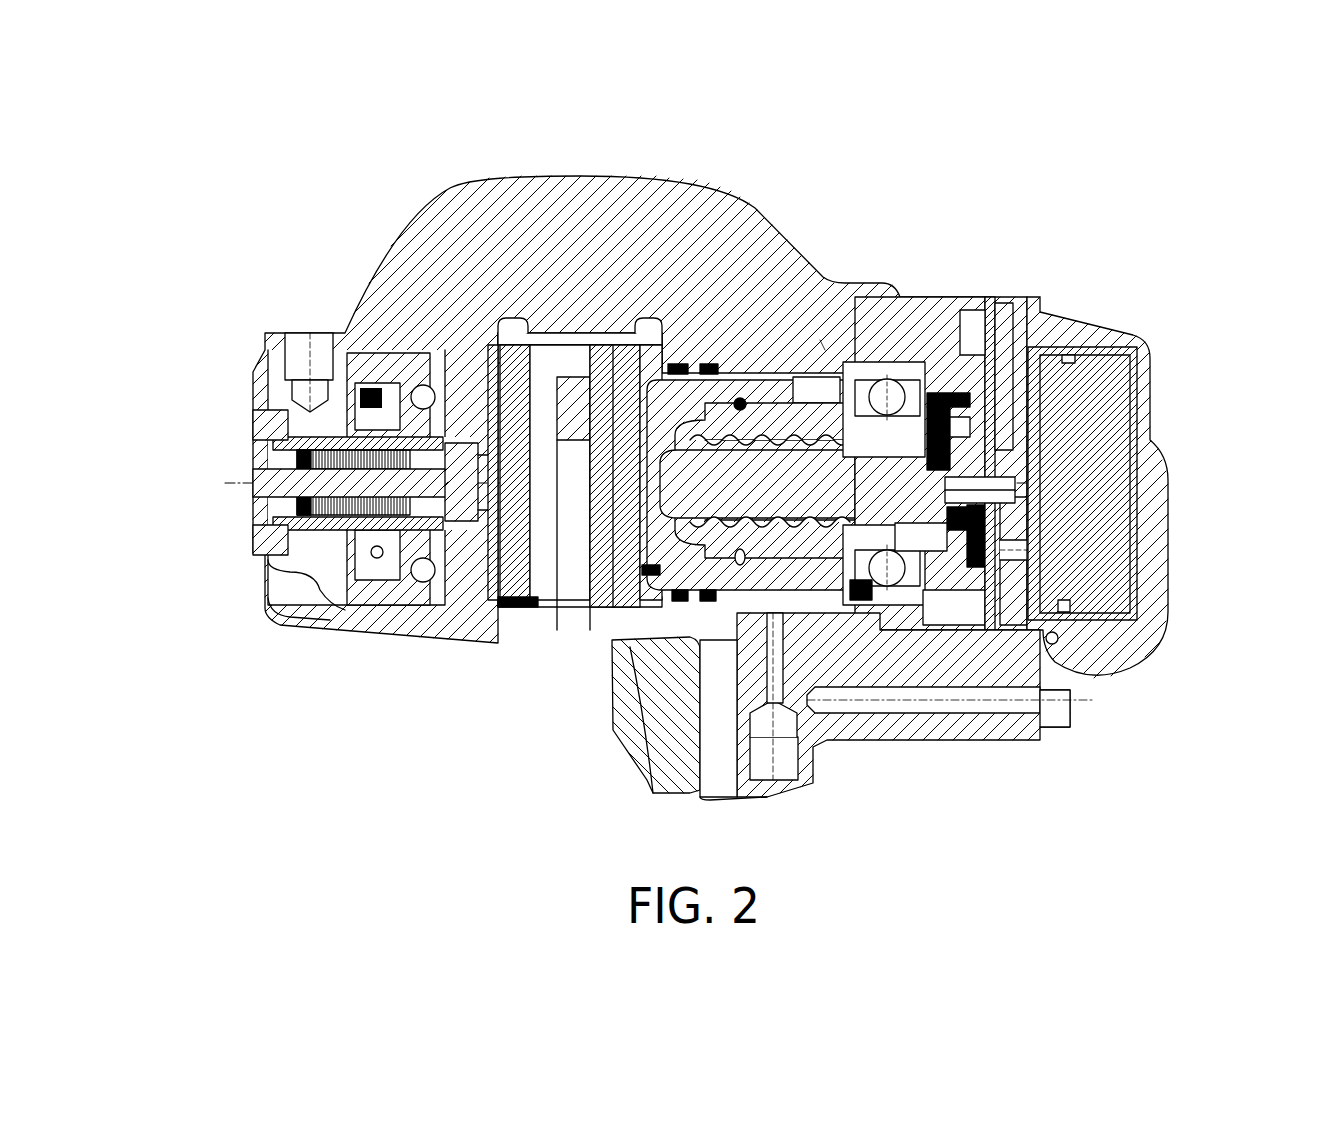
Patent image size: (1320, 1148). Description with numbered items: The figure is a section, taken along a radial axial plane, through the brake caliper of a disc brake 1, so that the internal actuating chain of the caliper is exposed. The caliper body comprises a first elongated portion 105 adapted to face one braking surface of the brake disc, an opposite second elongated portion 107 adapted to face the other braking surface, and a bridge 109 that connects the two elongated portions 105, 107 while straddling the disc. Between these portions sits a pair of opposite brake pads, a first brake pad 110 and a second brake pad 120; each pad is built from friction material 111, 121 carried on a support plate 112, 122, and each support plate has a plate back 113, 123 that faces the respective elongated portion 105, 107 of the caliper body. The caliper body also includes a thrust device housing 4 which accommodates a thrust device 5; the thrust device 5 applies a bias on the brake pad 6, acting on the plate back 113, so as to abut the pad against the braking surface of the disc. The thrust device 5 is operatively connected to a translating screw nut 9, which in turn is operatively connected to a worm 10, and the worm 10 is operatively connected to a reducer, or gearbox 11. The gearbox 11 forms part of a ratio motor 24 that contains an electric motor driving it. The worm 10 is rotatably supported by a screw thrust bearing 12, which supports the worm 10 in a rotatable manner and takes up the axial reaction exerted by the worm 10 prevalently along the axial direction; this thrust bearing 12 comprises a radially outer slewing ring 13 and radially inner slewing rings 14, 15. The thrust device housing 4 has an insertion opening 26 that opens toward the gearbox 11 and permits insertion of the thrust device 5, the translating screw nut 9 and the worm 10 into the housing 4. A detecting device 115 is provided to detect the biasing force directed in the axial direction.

The disc brake 1 is at (965, 192).
The thrust device housing 4 is at (852, 352).
The thrust device 5 is at (822, 345).
The brake pad 6 is at (613, 555).
The translating screw nut 9 is at (808, 492).
The worm 10 is at (868, 570).
The reducer, or gearbox 11 is at (1000, 432).
The screw thrust bearing 12 is at (960, 372).
The radially outer slewing ring 13 is at (913, 548).
The radially inner slewing ring 14 is at (960, 480).
The radially inner slewing ring 15 is at (975, 520).
The ratio motor 24 is at (1062, 420).
The insertion opening 26 is at (900, 385).
The first elongated portion 105 is at (827, 647).
The second elongated portion 107 is at (345, 335).
The bridge 109 is at (633, 210).
The first brake pad 110 is at (667, 357).
The friction material 111 is at (623, 413).
The support plate 112 is at (745, 345).
The plate back 113 is at (645, 590).
The detecting device 115 is at (248, 515).
The second brake pad 120 is at (525, 560).
The friction material 121 is at (543, 400).
The support plate 122 is at (500, 388).
The plate back 123 is at (503, 560).